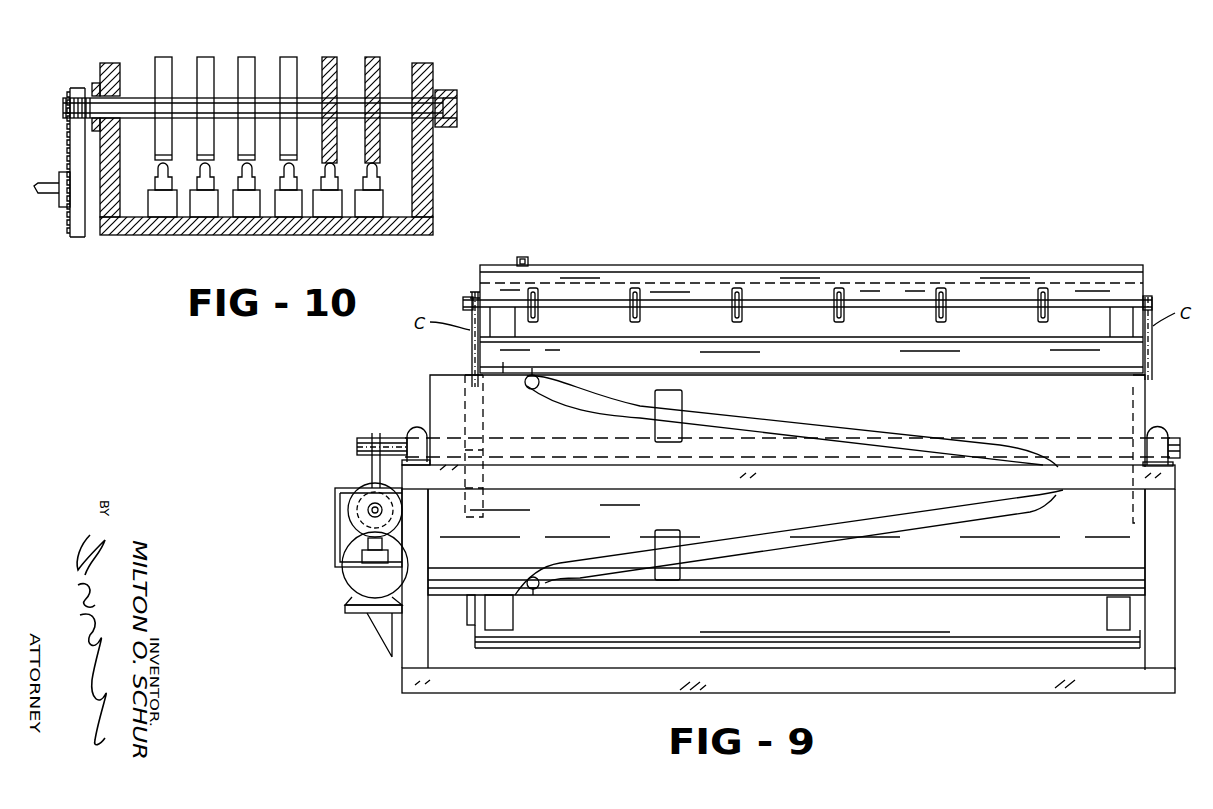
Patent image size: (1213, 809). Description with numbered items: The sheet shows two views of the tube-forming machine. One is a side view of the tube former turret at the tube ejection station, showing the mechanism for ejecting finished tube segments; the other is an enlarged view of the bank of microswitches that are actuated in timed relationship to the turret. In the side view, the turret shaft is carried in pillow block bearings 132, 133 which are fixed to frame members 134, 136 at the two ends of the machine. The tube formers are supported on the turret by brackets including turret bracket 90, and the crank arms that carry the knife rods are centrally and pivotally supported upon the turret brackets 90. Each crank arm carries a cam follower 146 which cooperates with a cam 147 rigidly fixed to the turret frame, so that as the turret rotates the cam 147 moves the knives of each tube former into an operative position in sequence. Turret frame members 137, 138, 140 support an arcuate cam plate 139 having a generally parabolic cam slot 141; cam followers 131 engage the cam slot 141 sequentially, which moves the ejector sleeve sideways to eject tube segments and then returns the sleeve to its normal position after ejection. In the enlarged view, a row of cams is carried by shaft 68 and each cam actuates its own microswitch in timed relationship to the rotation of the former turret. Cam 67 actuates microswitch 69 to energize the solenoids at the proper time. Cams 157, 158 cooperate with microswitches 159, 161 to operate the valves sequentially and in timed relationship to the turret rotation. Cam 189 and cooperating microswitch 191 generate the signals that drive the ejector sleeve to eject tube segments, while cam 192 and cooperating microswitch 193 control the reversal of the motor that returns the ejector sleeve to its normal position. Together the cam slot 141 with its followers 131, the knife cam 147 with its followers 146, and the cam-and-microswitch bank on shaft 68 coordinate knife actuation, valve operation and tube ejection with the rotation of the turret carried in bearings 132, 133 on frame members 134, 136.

In FIG. 10, the cam 67 is at (163, 62).
In FIG. 10, the shaft 68 is at (145, 97).
In FIG. 10, the microswitch 69 is at (138, 236).
In FIG. 10, the cam 157 is at (205, 58).
In FIG. 10, the cam 158 is at (247, 58).
In FIG. 10, the microswitch 159 is at (188, 234).
In FIG. 10, the microswitch 161 is at (242, 220).
In FIG. 10, the cam 189 is at (294, 60).
In FIG. 10, the microswitch 191 is at (290, 203).
In FIG. 10, the cam 192 is at (334, 60).
In FIG. 10, the microswitch 193 is at (337, 208).
In FIG. 9, the turret bracket 90 is at (512, 338).
In FIG. 9, the cam follower 131 is at (527, 262).
In FIG. 9, the pillow block bearing 132 is at (415, 428).
In FIG. 9, the pillow block bearing 133 is at (1156, 432).
In FIG. 9, the frame member 134 is at (412, 512).
In FIG. 9, the frame member 136 is at (1167, 523).
In FIG. 9, the turret frame member 137 is at (682, 404).
In FIG. 9, the turret frame member 138 is at (660, 535).
In FIG. 9, the arcuate cam plate 139 is at (777, 522).
In FIG. 9, the turret frame member 140 is at (1083, 486).
In FIG. 9, the cam slot 141 is at (782, 428).
In FIG. 9, the cam follower 146 is at (455, 380).
In FIG. 9, the cam 147 is at (466, 405).